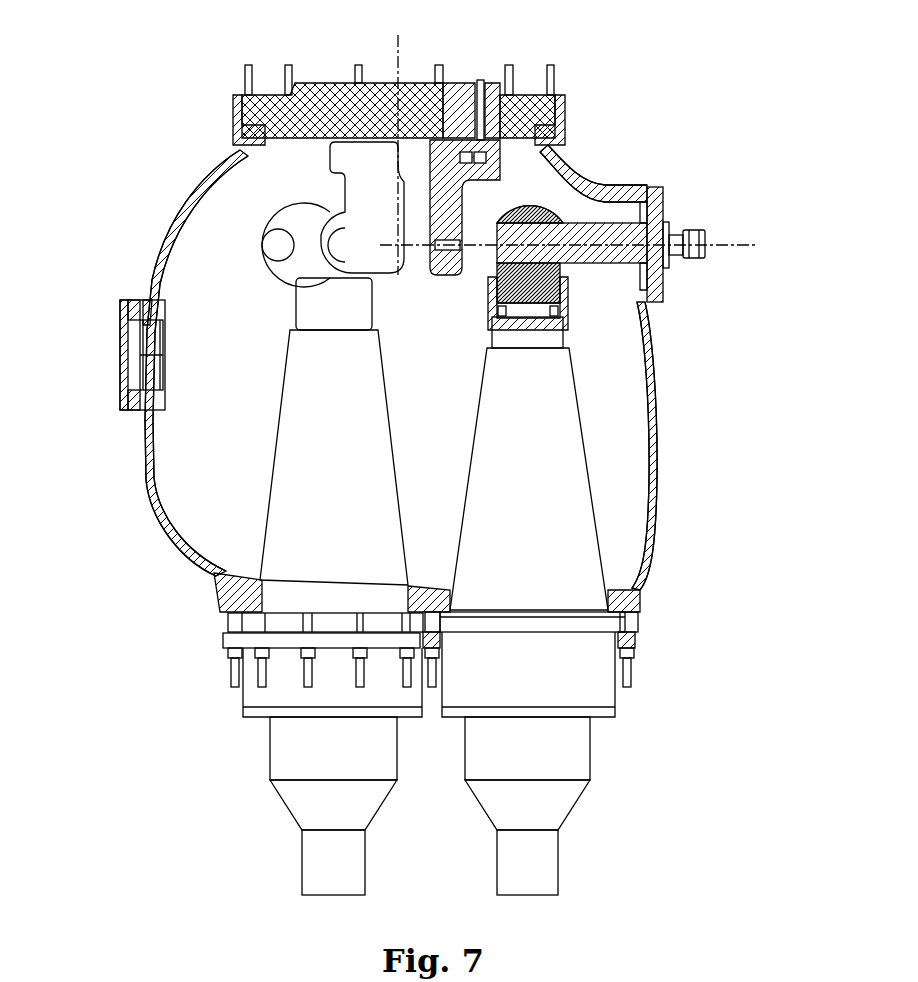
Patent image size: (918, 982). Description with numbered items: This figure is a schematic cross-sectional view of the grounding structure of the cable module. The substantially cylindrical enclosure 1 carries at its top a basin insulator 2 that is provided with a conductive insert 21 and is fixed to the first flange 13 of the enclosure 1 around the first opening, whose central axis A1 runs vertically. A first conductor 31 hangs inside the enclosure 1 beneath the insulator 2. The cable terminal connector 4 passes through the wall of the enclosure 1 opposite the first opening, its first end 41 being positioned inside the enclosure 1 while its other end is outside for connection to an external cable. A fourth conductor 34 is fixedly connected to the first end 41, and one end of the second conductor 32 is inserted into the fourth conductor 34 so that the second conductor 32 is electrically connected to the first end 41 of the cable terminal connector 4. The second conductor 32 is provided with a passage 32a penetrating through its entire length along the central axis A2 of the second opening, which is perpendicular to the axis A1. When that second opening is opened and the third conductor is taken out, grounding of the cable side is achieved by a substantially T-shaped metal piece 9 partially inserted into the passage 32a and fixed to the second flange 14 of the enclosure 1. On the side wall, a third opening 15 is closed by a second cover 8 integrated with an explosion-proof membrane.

The enclosure 1 is at (148, 495).
The insulator 2 is at (331, 100).
The first flange 13 is at (235, 133).
The conductive insert 21 is at (458, 90).
The first conductor 31 is at (405, 222).
The third opening 15 is at (145, 305).
The second cover 8 is at (120, 338).
The second conductor 32 is at (530, 205).
The passage 32a is at (548, 215).
The second flange 14 is at (652, 190).
The T-shaped metal piece 9 is at (655, 212).
The fourth conductor 34 is at (562, 312).
The first end 41 is at (545, 333).
The cable terminal connector 4 is at (545, 490).
The central axis of the first opening A1 is at (405, 60).
The central axis of the second opening A2 is at (738, 252).